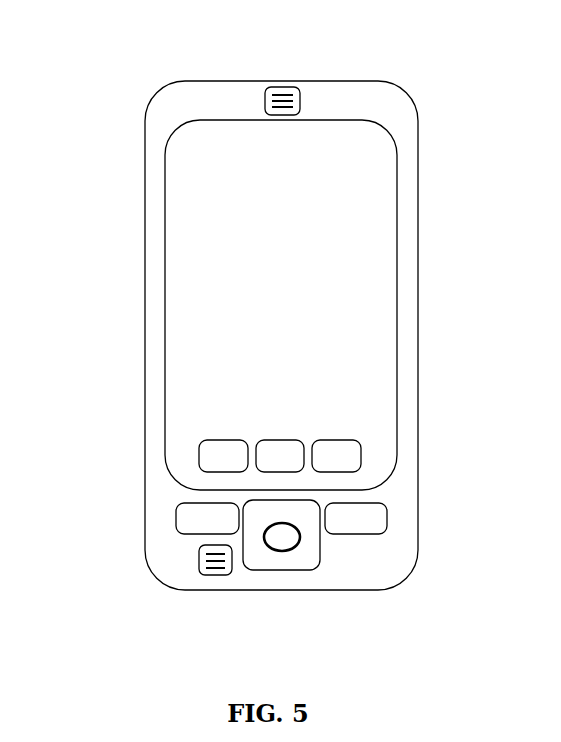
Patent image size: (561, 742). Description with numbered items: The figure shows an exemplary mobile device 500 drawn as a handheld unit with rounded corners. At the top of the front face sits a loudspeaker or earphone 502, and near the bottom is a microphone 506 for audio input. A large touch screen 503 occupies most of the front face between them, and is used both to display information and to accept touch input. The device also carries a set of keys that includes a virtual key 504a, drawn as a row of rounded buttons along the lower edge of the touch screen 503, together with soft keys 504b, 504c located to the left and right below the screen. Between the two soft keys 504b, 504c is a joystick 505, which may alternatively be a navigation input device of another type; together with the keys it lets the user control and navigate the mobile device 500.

The mobile device 500 is at (120, 153).
The loudspeaker or earphone 502 is at (280, 87).
The touch screen 503 is at (398, 221).
The virtual key 504a is at (198, 490).
The soft key 504b is at (176, 518).
The soft key 504c is at (387, 520).
The joystick 505 is at (320, 545).
The microphone 506 is at (208, 578).